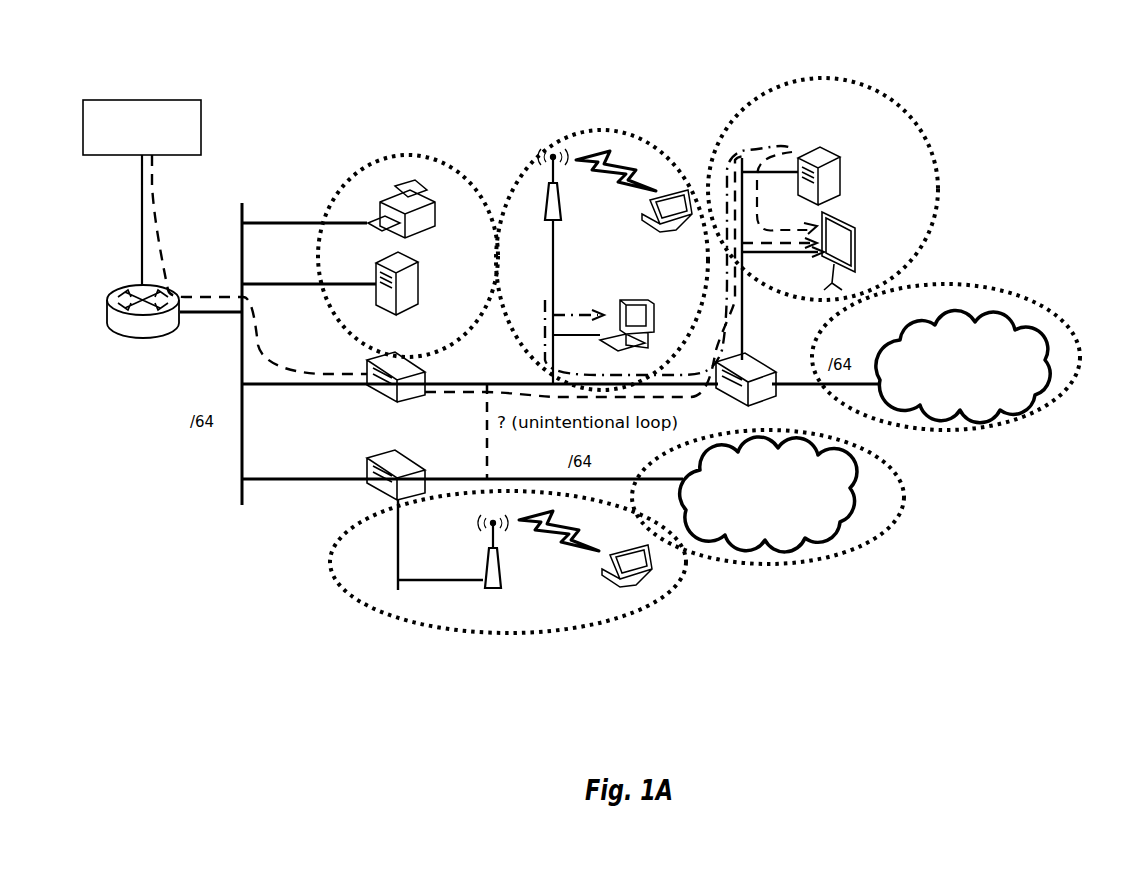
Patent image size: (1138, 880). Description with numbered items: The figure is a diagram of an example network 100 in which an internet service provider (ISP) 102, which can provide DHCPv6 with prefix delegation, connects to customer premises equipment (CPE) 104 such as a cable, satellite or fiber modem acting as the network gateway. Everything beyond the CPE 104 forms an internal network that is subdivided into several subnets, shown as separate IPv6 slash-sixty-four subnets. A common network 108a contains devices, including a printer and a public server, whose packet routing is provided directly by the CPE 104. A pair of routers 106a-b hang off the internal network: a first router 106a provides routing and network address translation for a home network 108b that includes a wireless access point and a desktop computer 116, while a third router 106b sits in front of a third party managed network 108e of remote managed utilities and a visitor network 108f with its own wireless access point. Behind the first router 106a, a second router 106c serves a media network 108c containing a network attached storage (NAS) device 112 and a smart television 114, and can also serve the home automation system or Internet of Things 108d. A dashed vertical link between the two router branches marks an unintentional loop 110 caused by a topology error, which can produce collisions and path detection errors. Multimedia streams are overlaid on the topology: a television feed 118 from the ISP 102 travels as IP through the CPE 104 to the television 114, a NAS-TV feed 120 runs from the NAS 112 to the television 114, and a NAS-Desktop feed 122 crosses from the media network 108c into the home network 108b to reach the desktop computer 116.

The network 100 is at (172, 662).
The internet service provider (ISP) 102 is at (142, 192).
The customer premises equipment (CPE) 104 is at (133, 338).
The routers 106a-b is at (342, 426).
The first router 106a is at (396, 377).
The third router 106b is at (396, 475).
The second router 106c is at (772, 398).
The common network 108a is at (388, 157).
The home network 108b is at (553, 148).
The media network 108c is at (795, 82).
The home automation system (Internet of Things) 108d is at (985, 288).
The 3rd party managed network 108e is at (780, 563).
The visitor network 108f is at (513, 660).
The unintentional loops 110 is at (447, 318).
The network attached storage (NAS) device 112 is at (857, 176).
The smart television 114 is at (866, 251).
The desktop computer 116 is at (628, 315).
The television feed 118 is at (157, 245).
The NAS-TV feed 120 is at (800, 145).
The NAS-Desktop feed 122 is at (744, 152).